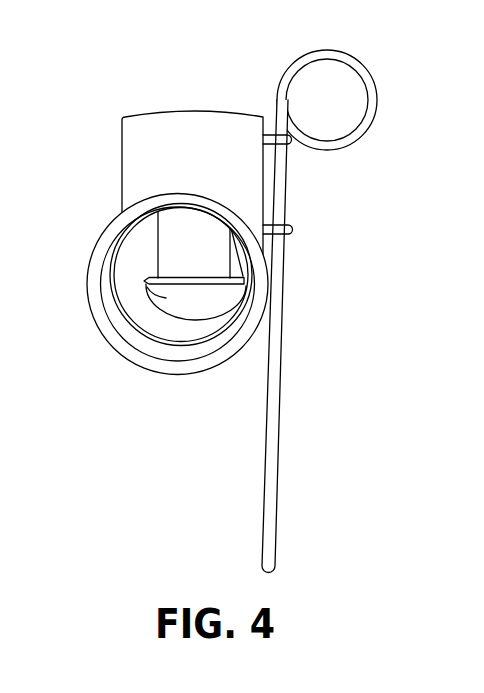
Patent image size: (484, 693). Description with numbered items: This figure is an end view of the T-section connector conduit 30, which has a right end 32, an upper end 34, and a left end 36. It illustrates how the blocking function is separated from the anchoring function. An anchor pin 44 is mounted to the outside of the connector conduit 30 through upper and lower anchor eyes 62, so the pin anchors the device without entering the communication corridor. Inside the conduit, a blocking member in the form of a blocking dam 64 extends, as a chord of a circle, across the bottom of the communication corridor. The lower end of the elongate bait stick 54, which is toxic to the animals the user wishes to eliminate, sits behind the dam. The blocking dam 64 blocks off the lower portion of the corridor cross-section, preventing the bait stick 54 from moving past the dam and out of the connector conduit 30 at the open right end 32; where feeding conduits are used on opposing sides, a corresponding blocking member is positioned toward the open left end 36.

The connector conduit 30 is at (121, 153).
The seventh right end 32 is at (126, 349).
The eighth upper end 34 is at (197, 112).
The ninth left end 36 is at (246, 273).
The anchor pin 44 is at (365, 68).
The bait stick 54 is at (246, 279).
The anchor eyes 62 is at (292, 229).
The blocking dam 64 is at (166, 298).